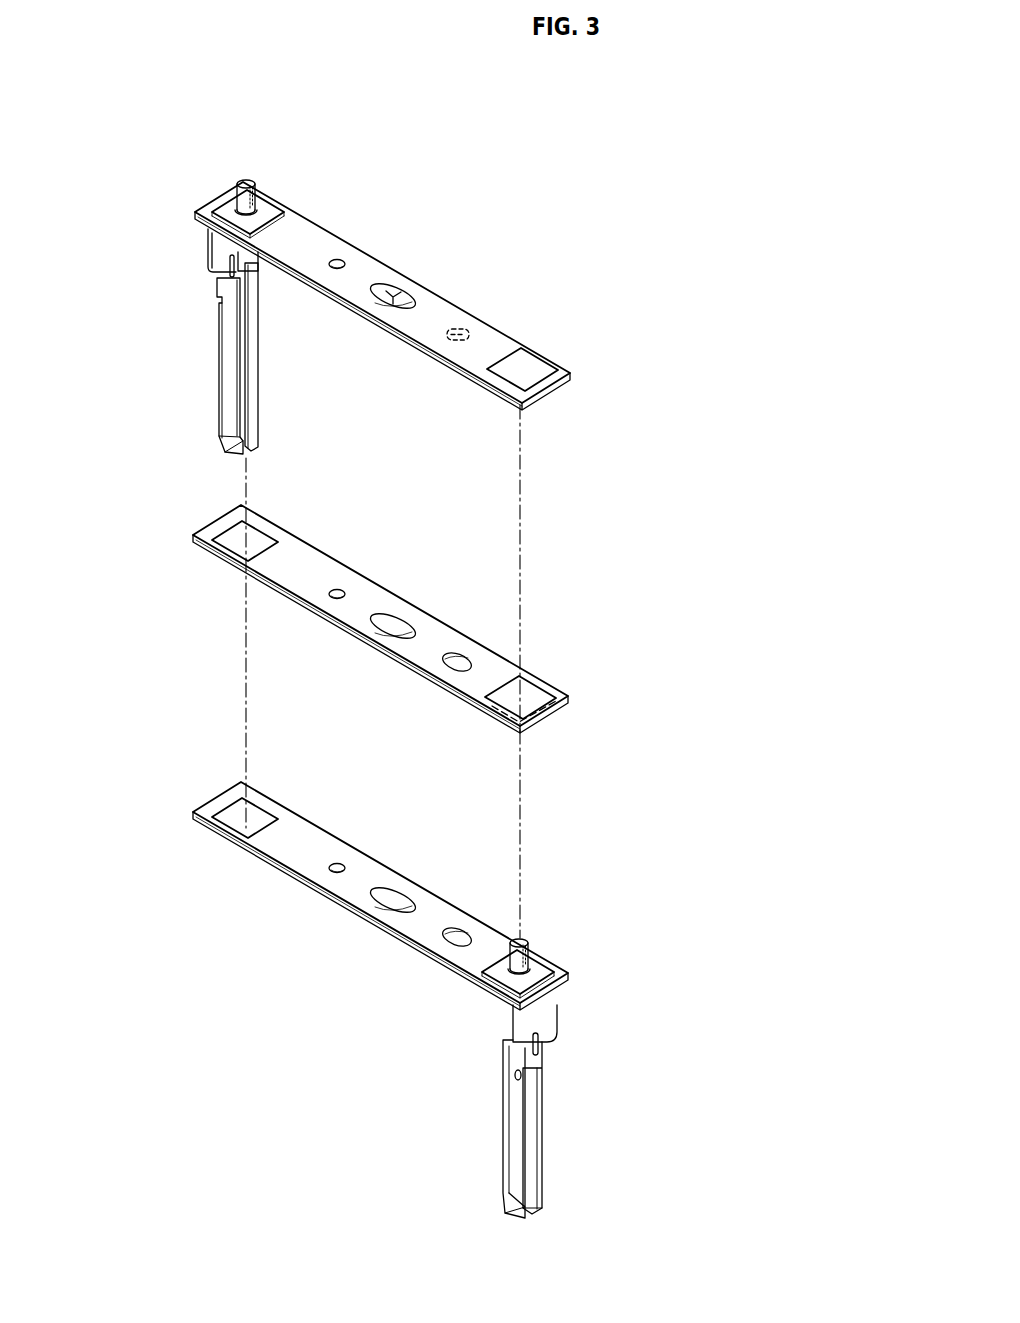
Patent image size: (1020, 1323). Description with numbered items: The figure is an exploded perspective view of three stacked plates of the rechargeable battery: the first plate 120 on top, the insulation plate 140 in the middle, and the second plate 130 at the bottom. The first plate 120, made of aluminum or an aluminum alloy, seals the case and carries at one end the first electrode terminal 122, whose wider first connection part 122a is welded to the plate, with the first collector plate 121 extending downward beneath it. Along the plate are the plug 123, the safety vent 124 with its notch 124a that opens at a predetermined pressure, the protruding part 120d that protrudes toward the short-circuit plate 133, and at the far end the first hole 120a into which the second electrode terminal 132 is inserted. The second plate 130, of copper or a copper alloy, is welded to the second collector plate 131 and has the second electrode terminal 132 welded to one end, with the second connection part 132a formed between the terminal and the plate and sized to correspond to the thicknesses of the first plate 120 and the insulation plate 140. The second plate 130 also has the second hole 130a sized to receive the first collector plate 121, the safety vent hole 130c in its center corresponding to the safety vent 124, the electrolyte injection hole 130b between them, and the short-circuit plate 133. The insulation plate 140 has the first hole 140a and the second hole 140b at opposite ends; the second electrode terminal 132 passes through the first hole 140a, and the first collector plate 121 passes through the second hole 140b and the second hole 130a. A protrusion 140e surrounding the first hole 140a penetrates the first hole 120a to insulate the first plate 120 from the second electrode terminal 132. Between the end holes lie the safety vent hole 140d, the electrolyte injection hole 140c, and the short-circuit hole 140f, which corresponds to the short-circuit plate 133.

The first plate 120 is at (573, 364).
The first hole 120a is at (528, 363).
The protruding part 120d is at (445, 338).
The first collector plate 121 is at (222, 248).
The first electrode terminal 122 is at (247, 181).
The first connection part 122a is at (262, 208).
The plug 123 is at (340, 260).
The safety vent 124 is at (393, 290).
The notch 124a is at (398, 295).
The second plate 130 is at (573, 974).
The second hole 130a is at (257, 816).
The electrolyte injection hole 130b is at (339, 864).
The safety vent hole 130c is at (398, 897).
The second collector plate 131 is at (552, 1012).
The second electrode terminal 132 is at (521, 940).
The second connection part 132a is at (540, 966).
The short-circuit plate 133 is at (446, 941).
The insulation plate 140 is at (573, 699).
The first hole 140a is at (535, 697).
The second hole 140b is at (257, 538).
The electrolyte injection hole 140c is at (339, 590).
The safety vent hole 140d is at (397, 625).
The protrusion 140e is at (540, 712).
The short-circuit hole 140f is at (450, 667).